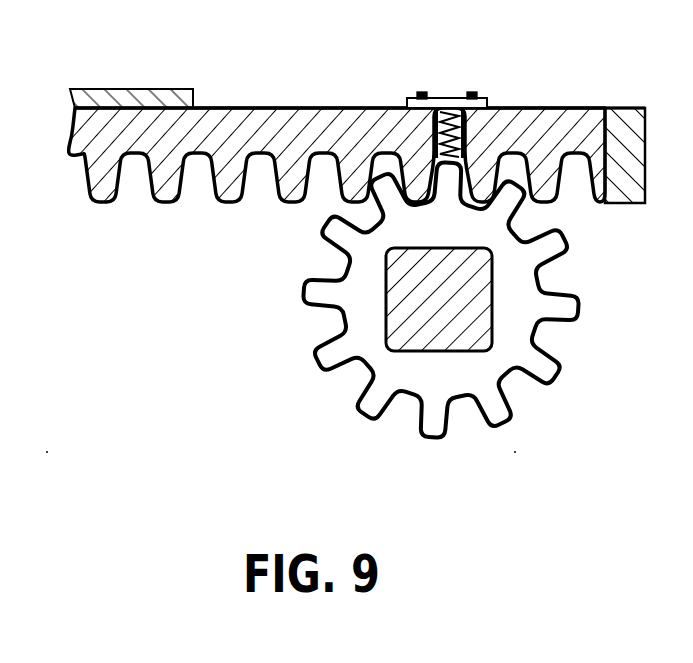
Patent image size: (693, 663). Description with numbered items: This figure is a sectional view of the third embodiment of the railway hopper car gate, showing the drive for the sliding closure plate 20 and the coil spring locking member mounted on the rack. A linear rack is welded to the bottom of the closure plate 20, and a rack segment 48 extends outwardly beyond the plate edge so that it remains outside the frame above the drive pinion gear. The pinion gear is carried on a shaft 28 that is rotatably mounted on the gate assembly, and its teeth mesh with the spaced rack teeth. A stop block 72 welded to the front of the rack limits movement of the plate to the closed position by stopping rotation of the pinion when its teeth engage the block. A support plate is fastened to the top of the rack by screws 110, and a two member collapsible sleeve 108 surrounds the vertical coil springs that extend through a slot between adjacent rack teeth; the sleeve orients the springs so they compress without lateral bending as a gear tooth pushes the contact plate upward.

The closure plate 20 is at (150, 98).
The rack segment 48 is at (246, 86).
The stop block 72 is at (641, 149).
The collapsible sleeve 108 is at (433, 130).
The screws 110 is at (473, 93).
The shaft 28 is at (397, 318).